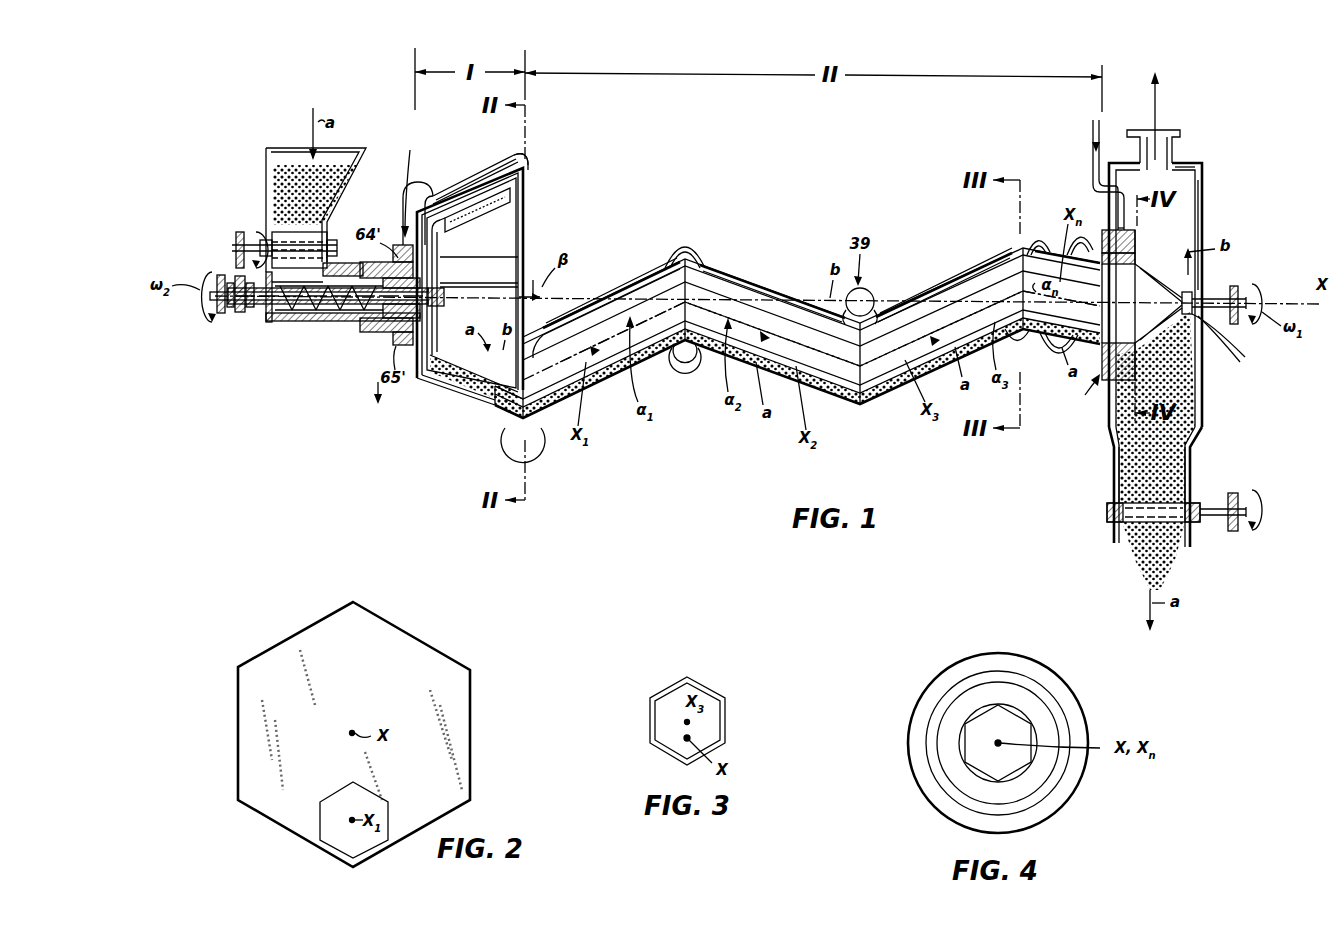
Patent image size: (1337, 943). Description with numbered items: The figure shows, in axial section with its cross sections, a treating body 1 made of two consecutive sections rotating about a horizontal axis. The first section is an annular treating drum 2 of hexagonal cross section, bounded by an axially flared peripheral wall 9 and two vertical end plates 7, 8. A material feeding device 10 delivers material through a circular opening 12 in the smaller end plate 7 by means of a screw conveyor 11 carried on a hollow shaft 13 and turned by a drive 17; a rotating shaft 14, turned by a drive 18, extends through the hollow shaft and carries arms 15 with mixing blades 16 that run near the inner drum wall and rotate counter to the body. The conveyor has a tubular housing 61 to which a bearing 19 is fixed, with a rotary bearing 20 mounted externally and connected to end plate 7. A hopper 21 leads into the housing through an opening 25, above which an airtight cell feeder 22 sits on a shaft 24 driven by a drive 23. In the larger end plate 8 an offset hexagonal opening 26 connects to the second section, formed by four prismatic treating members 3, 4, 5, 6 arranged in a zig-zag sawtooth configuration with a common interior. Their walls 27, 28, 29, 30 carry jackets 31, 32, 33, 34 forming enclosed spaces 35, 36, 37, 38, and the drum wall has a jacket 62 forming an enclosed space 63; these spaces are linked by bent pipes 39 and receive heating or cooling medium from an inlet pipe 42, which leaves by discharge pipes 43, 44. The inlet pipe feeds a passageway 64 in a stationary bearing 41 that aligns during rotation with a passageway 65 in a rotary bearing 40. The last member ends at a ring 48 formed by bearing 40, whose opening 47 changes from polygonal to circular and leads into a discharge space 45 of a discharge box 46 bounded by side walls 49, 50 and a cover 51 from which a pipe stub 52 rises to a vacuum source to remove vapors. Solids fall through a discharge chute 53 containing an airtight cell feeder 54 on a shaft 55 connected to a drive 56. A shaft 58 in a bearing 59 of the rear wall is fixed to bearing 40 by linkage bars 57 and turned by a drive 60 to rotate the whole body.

In FIG. 1, the treating body 1 is at (728, 428).
In FIG. 1, the treating drum 2 is at (528, 222).
In FIG. 2, the treating drum 2 is at (321, 614).
In FIG. 1, the treating member 3 is at (625, 370).
In FIG. 1, the treating member 4 is at (830, 380).
In FIG. 1, the treating member 5 is at (880, 374).
In FIG. 3, the treating member 5 is at (667, 682).
In FIG. 1, the treating member 6 is at (1024, 244).
In FIG. 1, the end plate 7 is at (404, 240).
In FIG. 1, the end plate 8 is at (527, 246).
In FIG. 2, the end plate 8 is at (360, 683).
In FIG. 1, the peripheral wall 9 is at (482, 176).
In FIG. 1, the material feeding device 10 is at (298, 324).
In FIG. 1, the screw conveyor 11 is at (348, 312).
In FIG. 1, the circular opening 12 is at (432, 290).
In FIG. 1, the hollow shaft 13 is at (252, 310).
In FIG. 1, the rotating shaft 14 is at (230, 310).
In FIG. 1, the arms 15 is at (450, 260).
In FIG. 1, the mixing blades 16 is at (512, 190).
In FIG. 1, the drive 17 is at (241, 312).
In FIG. 1, the drive 18 is at (220, 276).
In FIG. 1, the bearing 19 is at (376, 332).
In FIG. 1, the rotary bearing 20 is at (395, 262).
In FIG. 1, the hopper 21 is at (268, 152).
In FIG. 1, the airtight cell feeder 22 is at (300, 240).
In FIG. 1, the drive 23 is at (238, 232).
In FIG. 1, the shaft 24 is at (232, 247).
In FIG. 1, the opening 25 is at (308, 278).
In FIG. 1, the hexagonal opening 26 is at (498, 432).
In FIG. 2, the hexagonal opening 26 is at (340, 796).
In FIG. 1, the wall 27 is at (614, 288).
In FIG. 1, the wall 28 is at (712, 252).
In FIG. 1, the wall 29 is at (975, 246).
In FIG. 1, the wall 30 is at (1044, 248).
In FIG. 1, the jacket 31 is at (628, 261).
In FIG. 1, the jacket 32 is at (770, 262).
In FIG. 1, the jacket 33 is at (905, 264).
In FIG. 1, the jacket 34 is at (1038, 230).
In FIG. 1, the enclosed space 35 is at (660, 246).
In FIG. 1, the enclosed space 36 is at (800, 282).
In FIG. 1, the enclosed space 37 is at (935, 262).
In FIG. 1, the enclosed space 38 is at (1055, 358).
In FIG. 1, the bent pipes 39 is at (535, 456).
In FIG. 1, the bearing 40 is at (1137, 355).
In FIG. 4, the bearing 40 is at (945, 735).
In FIG. 1, the bearing 41 is at (1137, 240).
In FIG. 4, the bearing 41 is at (995, 672).
In FIG. 1, the inlet pipe 42 is at (1092, 140).
In FIG. 1, the discharge pipe 43 is at (412, 180).
In FIG. 1, the discharge pipe 44 is at (374, 392).
In FIG. 1, the discharge space 45 is at (1196, 386).
In FIG. 1, the discharge box 46 is at (1212, 172).
In FIG. 1, the opening 47 is at (1120, 295).
In FIG. 4, the opening 47 is at (975, 770).
In FIG. 1, the ring 48 is at (1083, 395).
In FIG. 1, the side wall 49 is at (1116, 222).
In FIG. 4, the side wall 49 is at (1052, 674).
In FIG. 1, the side wall 50 is at (1203, 205).
In FIG. 1, the cover 51 is at (1192, 166).
In FIG. 1, the pipe stub 52 is at (1142, 132).
In FIG. 1, the discharge chute 53 is at (1118, 470).
In FIG. 1, the airtight cell feeder 54 is at (1140, 510).
In FIG. 1, the shaft 55 is at (1212, 509).
In FIG. 1, the drive 56 is at (1243, 531).
In FIG. 1, the bars 57 is at (1228, 347).
In FIG. 1, the shaft 58 is at (1200, 298).
In FIG. 1, the bearing 59 is at (1215, 314).
In FIG. 1, the drive 60 is at (1236, 286).
In FIG. 1, the tubular housing 61 is at (269, 322).
In FIG. 1, the jacket 62 is at (509, 168).
In FIG. 1, the enclosed space 63 is at (461, 185).
In FIG. 1, the passageway 64 is at (1137, 245).
In FIG. 1, the passageway 65 is at (1137, 262).